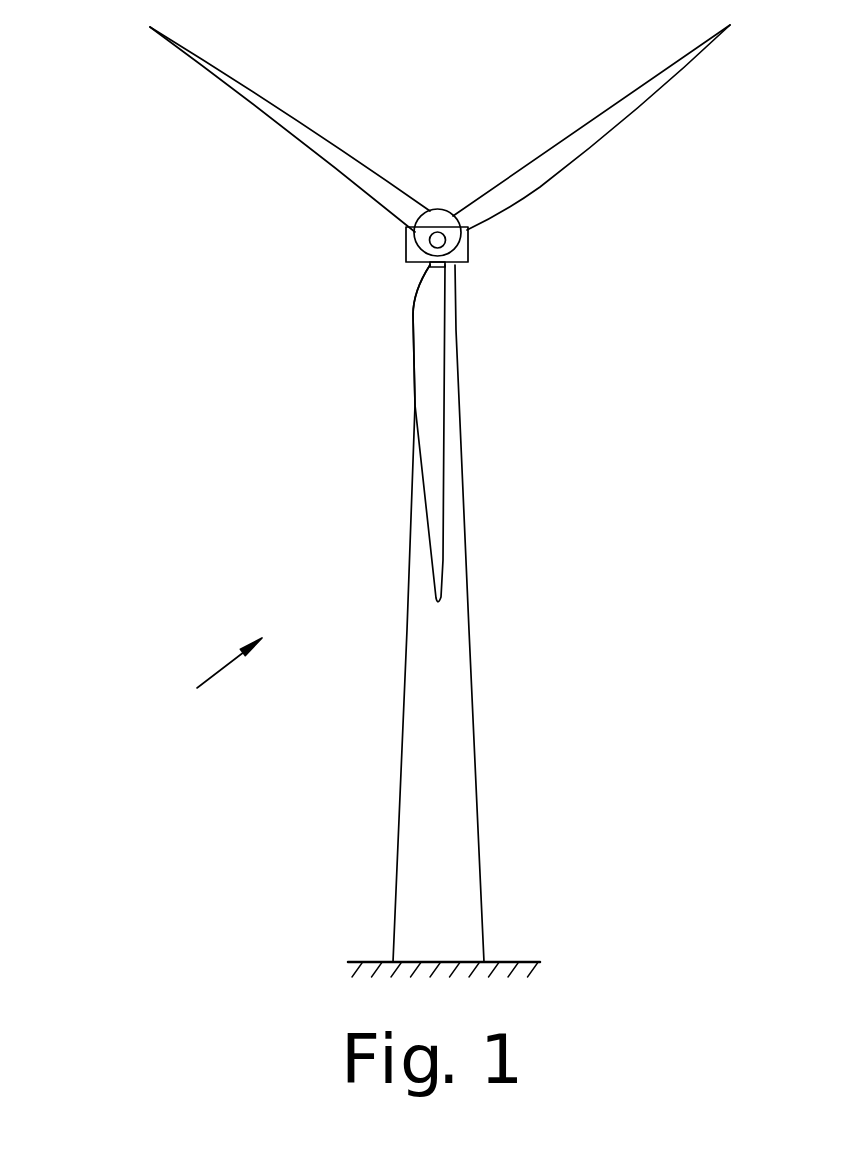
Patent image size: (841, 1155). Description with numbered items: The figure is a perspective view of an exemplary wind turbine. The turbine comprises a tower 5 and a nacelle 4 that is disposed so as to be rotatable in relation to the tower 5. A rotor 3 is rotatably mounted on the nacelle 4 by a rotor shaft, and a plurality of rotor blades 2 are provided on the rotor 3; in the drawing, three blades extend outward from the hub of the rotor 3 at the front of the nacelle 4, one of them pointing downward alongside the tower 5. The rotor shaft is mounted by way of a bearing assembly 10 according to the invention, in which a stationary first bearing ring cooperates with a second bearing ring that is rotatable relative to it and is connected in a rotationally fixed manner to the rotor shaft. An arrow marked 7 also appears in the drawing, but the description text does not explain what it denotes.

The bearing assembly 10 is at (383, 501).
The rotor blades 2 is at (433, 342).
The rotor 3 is at (405, 249).
The nacelle 4 is at (435, 208).
The tower 5 is at (452, 843).
The wind direction arrow 7 is at (178, 710).